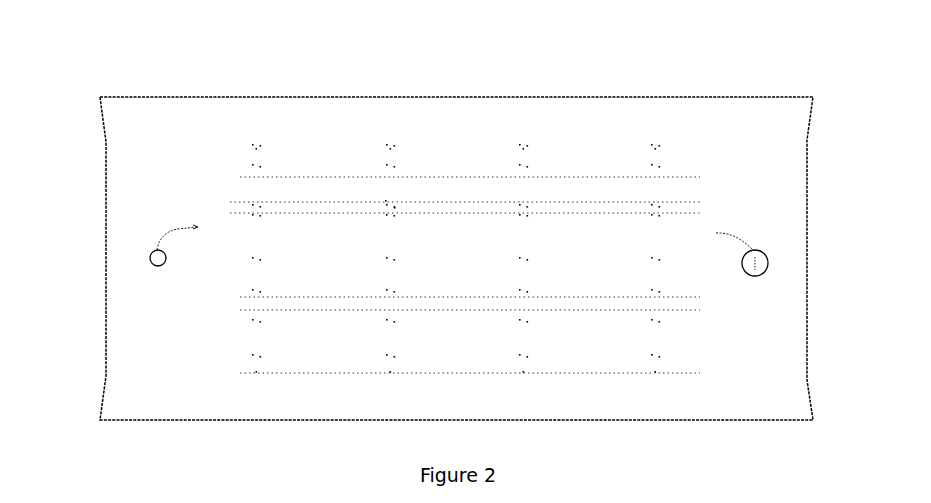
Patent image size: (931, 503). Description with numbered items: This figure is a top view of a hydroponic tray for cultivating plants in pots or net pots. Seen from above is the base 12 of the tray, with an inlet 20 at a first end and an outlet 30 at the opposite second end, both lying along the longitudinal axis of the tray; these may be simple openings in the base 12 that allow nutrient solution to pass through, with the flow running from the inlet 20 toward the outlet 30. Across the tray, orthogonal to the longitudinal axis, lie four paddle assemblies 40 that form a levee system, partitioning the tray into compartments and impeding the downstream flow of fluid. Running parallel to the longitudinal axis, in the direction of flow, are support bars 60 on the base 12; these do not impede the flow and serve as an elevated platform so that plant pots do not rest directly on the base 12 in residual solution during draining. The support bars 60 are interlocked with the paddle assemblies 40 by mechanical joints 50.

The base 12 is at (167, 173).
The inlet 20 is at (150, 257).
The outlet 30 is at (768, 264).
The paddle assembly 40 is at (391, 145).
The mechanical joint 50 is at (382, 206).
The support bar 60 is at (452, 172).